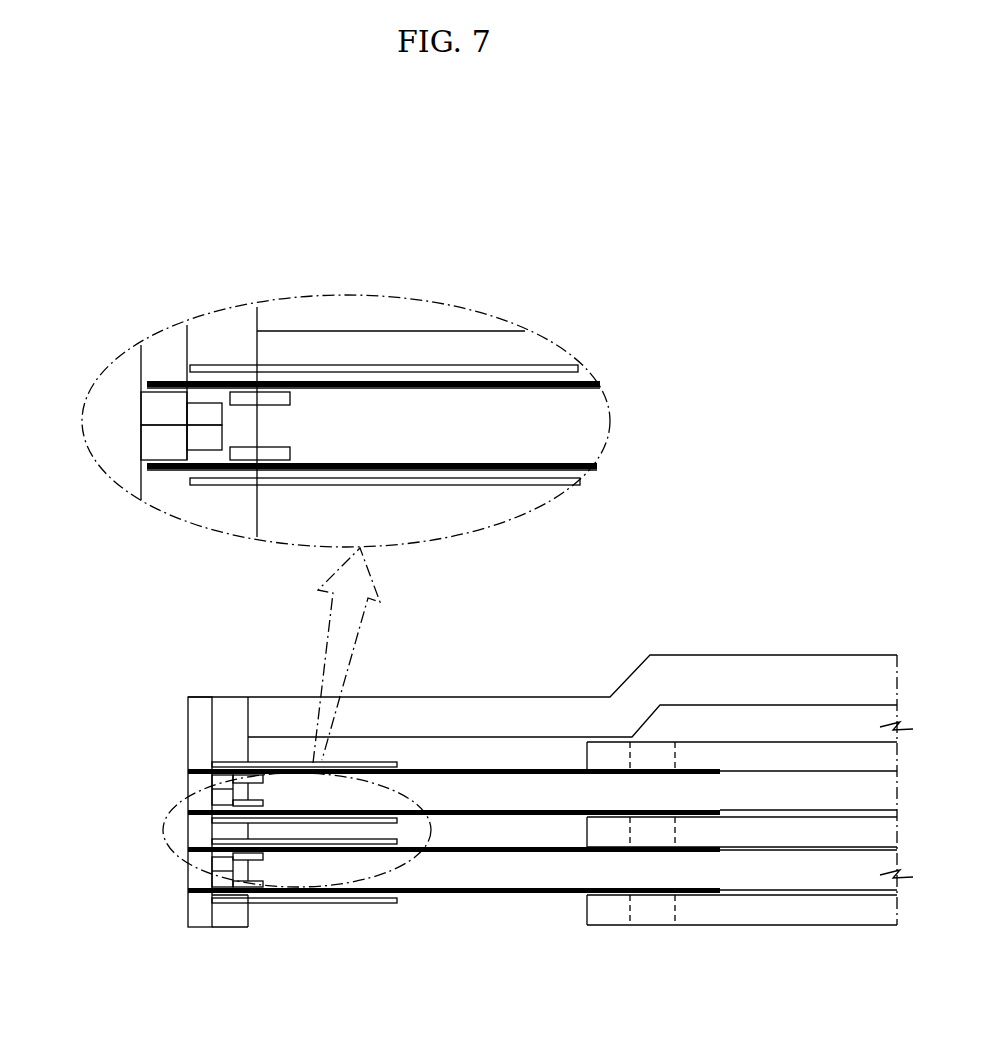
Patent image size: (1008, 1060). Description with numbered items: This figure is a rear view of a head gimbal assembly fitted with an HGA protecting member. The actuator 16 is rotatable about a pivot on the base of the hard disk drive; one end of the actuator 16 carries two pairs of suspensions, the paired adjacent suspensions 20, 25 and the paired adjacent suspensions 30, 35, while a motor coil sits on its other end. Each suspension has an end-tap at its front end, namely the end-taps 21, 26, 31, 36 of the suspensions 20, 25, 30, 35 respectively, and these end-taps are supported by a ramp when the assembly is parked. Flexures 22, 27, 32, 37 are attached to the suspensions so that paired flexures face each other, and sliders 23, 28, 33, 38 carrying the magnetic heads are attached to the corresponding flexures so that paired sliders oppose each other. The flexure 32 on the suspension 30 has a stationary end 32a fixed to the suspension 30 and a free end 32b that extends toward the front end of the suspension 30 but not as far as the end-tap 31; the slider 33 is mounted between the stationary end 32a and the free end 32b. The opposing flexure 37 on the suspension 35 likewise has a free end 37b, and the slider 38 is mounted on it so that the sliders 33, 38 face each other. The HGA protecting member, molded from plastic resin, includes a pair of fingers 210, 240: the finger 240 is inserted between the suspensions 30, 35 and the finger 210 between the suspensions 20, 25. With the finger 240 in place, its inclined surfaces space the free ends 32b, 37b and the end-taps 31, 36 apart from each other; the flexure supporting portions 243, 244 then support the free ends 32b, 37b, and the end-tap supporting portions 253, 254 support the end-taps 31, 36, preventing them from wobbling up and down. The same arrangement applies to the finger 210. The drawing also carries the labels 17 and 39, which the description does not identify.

The actuator 16 is at (795, 925).
The flow passage 17 is at (655, 748).
The suspension 20 is at (737, 810).
The end-tap 21 is at (202, 897).
The flexure 22 is at (290, 897).
The slider 23 is at (255, 900).
The suspension 25 is at (573, 852).
The end-tap 26 is at (383, 823).
The flexure 27 is at (322, 852).
The slider 28 is at (300, 883).
The suspension 30 is at (377, 539).
The end-tap 31 is at (167, 470).
The flexure 32 is at (360, 462).
The stationary end 32a is at (478, 462).
The free end 32b is at (198, 457).
The slider 33 is at (270, 452).
The suspension 35 is at (603, 768).
The end-tap 36 is at (165, 380).
The flexure 37 is at (367, 388).
The free end 37b is at (198, 397).
The slider 38 is at (270, 400).
The upper conductive layer 39 is at (470, 388).
The finger 210 is at (383, 917).
The finger 240 is at (383, 823).
The flexure supporting portion 243 is at (186, 430).
The flexure supporting portion 244 is at (186, 420).
The end-tap supporting portion 253 is at (158, 463).
The end-tap supporting portion 254 is at (158, 383).